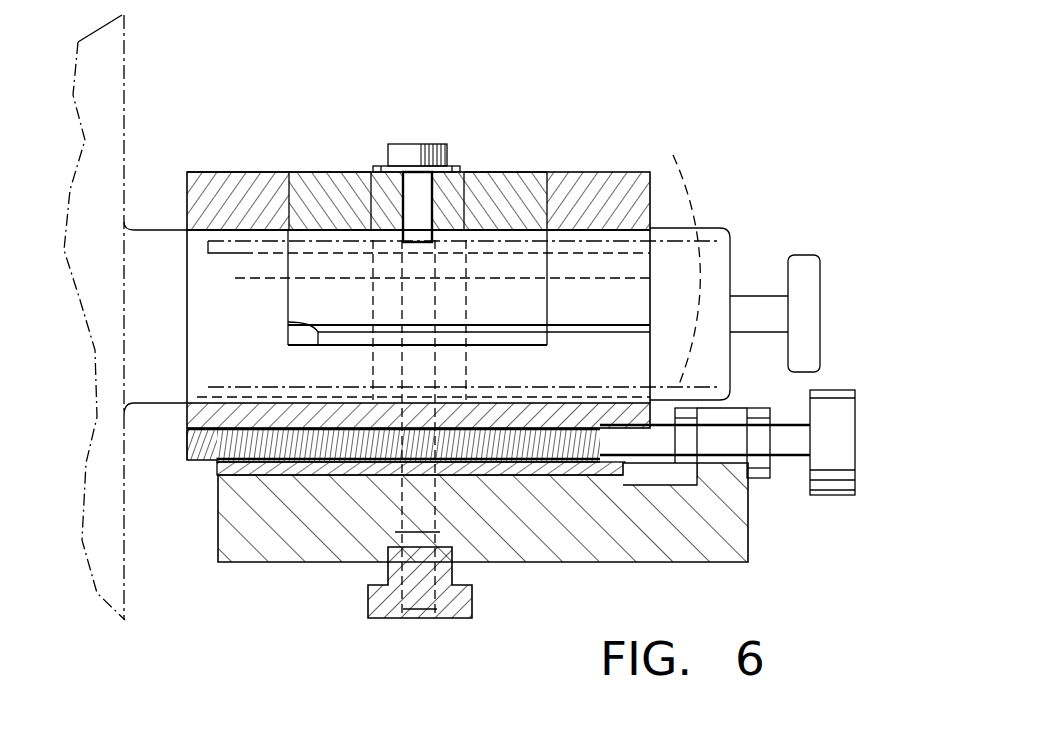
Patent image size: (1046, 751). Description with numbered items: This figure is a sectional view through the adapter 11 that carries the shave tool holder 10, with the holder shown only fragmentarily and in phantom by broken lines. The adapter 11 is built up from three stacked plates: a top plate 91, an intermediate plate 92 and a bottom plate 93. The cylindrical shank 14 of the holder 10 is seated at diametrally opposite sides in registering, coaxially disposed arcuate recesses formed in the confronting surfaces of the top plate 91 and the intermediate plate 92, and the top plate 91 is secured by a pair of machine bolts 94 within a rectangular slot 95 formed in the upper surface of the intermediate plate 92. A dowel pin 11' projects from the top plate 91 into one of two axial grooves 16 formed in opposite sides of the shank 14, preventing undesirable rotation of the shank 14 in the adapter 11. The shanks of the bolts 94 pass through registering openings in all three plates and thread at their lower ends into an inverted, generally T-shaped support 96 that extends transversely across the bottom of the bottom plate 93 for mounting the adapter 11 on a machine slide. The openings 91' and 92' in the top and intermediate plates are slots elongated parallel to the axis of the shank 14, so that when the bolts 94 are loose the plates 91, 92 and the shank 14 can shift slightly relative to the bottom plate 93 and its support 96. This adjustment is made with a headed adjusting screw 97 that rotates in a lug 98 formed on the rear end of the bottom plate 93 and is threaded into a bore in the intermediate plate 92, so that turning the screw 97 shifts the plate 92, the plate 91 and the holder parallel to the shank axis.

The shave tool holder 10 is at (152, 93).
The adapter 11 is at (453, 330).
The dowel pin 11' is at (349, 155).
The shank 14 is at (732, 258).
The axial grooves 16 is at (660, 243).
The top plate 91 is at (504, 133).
The openings in top plate 91' is at (469, 307).
The intermediate plate 92 is at (238, 135).
The openings in intermediate plate 92' is at (418, 393).
The bottom plate 93 is at (272, 548).
The machine bolts 94 is at (401, 145).
The rectangular slot 95 is at (292, 323).
The T-shaped support 96 is at (370, 607).
The adjusting screw 97 is at (782, 462).
The lug 98 is at (732, 407).